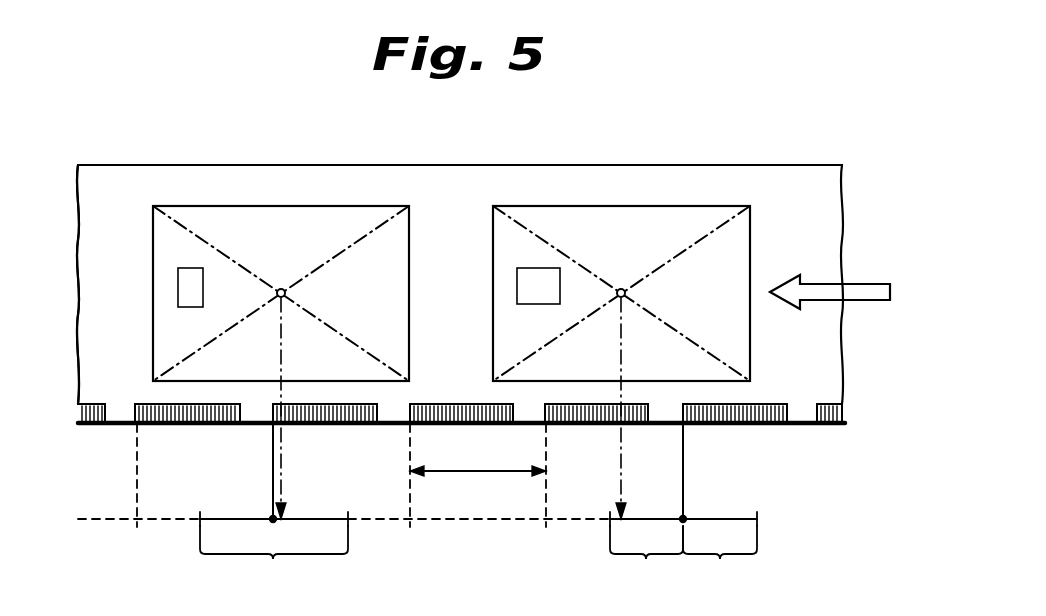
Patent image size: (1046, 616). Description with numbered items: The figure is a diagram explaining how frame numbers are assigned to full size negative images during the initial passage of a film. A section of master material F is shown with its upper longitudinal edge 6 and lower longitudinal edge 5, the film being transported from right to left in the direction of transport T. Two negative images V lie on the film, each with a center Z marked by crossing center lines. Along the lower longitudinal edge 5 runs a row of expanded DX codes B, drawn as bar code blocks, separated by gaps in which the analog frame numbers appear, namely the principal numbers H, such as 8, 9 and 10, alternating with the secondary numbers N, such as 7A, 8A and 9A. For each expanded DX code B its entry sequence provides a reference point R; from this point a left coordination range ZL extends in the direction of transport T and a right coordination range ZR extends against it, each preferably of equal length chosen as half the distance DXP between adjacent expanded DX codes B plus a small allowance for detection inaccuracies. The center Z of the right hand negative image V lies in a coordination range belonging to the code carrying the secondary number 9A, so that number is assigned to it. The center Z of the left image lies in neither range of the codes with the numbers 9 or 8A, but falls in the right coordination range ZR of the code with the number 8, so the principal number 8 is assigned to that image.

The lower longitudinal edge 5 is at (797, 428).
The upper longitudinal edge 6 is at (764, 163).
The master material F is at (154, 186).
The negative image V is at (285, 222).
The center of the negative image Z is at (287, 292).
The reference point R is at (271, 516).
The secondary number N is at (119, 402).
The principal number H is at (255, 402).
The expanded DX code B is at (175, 428).
The direction of transport T is at (866, 292).
The distance of adjacent expanded DX codes DXP is at (478, 457).
The left coordination range ZL is at (646, 560).
The right coordination range ZR is at (734, 582).
The frame number 7A is at (120, 413).
The principal number 8 is at (256, 413).
The secondary number 8A is at (393, 413).
The principal number 9 is at (529, 413).
The secondary number 9A is at (665, 413).
The frame number 10 is at (802, 413).